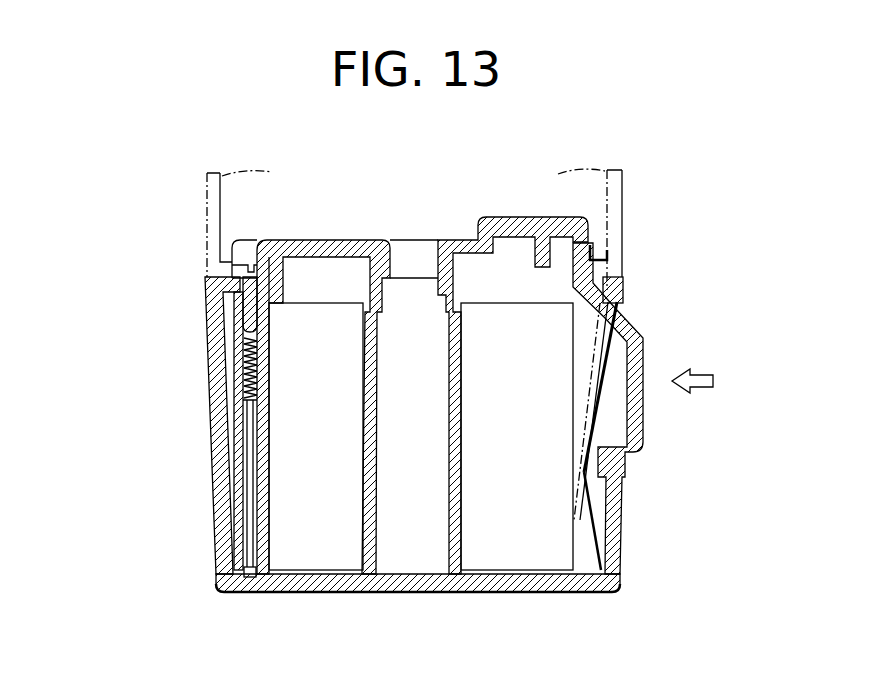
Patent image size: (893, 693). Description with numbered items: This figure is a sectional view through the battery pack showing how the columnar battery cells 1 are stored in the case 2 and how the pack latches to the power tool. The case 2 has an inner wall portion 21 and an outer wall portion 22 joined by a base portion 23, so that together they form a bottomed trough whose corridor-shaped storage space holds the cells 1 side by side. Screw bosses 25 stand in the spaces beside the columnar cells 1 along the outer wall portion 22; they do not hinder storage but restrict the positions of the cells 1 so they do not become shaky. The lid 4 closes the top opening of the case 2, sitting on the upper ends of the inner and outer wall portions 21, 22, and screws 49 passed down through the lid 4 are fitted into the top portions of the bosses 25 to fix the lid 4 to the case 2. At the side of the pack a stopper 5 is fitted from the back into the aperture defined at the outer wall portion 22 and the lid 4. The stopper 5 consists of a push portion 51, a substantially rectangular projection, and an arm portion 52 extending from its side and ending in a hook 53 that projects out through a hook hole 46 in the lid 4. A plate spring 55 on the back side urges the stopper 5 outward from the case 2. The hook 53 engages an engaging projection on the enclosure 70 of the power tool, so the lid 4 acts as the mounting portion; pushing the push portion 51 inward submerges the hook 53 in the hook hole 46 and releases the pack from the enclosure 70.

The battery cell 1 is at (282, 527).
The case 2 is at (182, 367).
The lid 4 is at (347, 239).
The stopper 5 is at (648, 335).
The inner wall portion 21 is at (380, 555).
The outer wall portion 22 is at (210, 418).
The base portion 23 is at (283, 590).
The screw boss 25 is at (240, 484).
The hook hole 46 is at (598, 230).
The screw 49 is at (252, 287).
The push portion 51 is at (645, 408).
The arm portion 52 is at (625, 285).
The hook 53 is at (593, 248).
The plate spring 55 is at (645, 448).
The enclosure 70 is at (232, 240).